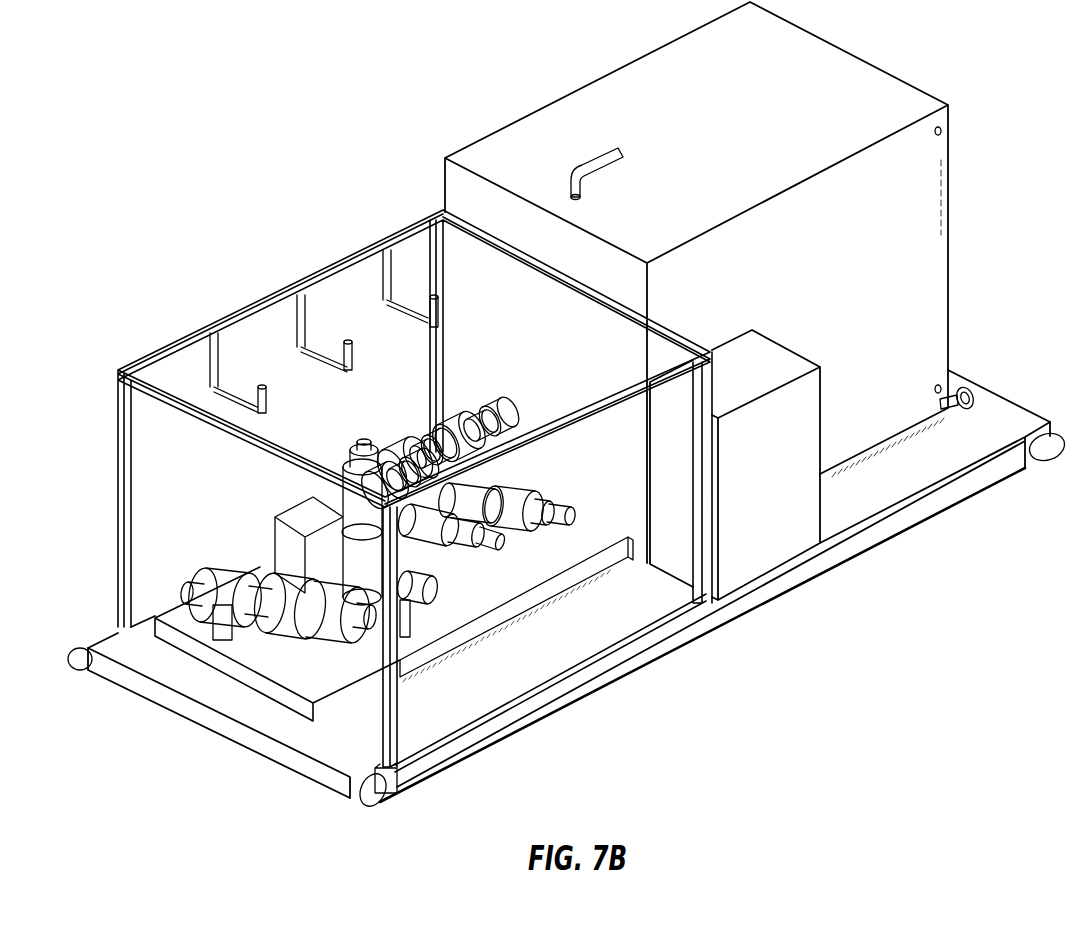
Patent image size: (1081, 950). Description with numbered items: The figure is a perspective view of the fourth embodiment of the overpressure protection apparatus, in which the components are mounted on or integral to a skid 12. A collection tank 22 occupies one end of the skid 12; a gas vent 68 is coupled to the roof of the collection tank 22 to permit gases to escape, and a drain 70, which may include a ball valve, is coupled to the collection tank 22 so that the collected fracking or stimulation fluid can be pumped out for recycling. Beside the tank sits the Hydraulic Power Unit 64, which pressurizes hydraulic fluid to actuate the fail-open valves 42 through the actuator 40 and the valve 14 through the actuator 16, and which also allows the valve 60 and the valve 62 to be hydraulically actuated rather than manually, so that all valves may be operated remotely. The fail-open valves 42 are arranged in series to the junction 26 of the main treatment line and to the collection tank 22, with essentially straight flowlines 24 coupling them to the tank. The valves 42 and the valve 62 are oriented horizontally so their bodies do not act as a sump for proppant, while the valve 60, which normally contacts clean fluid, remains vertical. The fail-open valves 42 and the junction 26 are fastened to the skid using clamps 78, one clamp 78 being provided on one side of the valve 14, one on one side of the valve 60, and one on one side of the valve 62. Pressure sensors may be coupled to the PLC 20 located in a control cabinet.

The skid 12 is at (948, 517).
The valve 14 is at (466, 467).
The actuator 16 is at (537, 609).
The PLC 20 is at (776, 480).
The collection tank 22 is at (945, 248).
The flowlines 24 is at (497, 425).
The junction 26 is at (308, 502).
The actuator 40 is at (560, 537).
The fail-open valves 42 is at (440, 450).
The valve 60 is at (355, 553).
The valve 62 is at (277, 567).
The Hydraulic Power Unit 64 is at (762, 558).
The gas vent 68 is at (612, 163).
The drain 70 is at (963, 409).
The clamps 78 is at (440, 582).